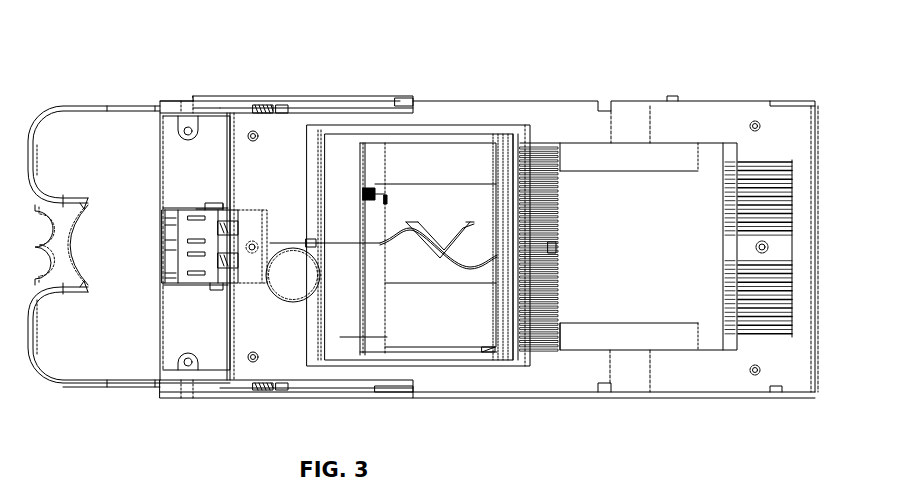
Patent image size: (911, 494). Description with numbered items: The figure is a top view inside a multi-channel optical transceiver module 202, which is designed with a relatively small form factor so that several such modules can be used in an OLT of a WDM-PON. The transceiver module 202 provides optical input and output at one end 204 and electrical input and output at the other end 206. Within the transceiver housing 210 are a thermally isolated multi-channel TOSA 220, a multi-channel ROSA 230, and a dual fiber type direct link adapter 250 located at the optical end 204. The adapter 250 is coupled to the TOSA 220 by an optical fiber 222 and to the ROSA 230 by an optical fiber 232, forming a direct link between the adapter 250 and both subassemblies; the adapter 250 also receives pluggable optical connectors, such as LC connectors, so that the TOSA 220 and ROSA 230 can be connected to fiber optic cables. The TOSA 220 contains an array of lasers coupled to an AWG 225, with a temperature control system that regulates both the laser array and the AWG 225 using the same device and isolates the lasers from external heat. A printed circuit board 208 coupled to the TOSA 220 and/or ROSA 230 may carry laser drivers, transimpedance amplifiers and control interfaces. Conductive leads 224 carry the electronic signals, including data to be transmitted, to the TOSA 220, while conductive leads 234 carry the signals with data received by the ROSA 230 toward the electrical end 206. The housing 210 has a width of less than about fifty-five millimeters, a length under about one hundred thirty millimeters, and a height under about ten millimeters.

The multi-channel optical transceiver module 202 is at (169, 62).
The end 204 is at (148, 225).
The end 206 is at (806, 184).
The printed circuit board 208 is at (563, 385).
The transceiver housing 210 is at (286, 397).
The thermally isolated multi-channel TOSA 220 is at (467, 380).
The optical fiber 222 is at (293, 230).
The conductive leads 224 is at (540, 158).
The AWG 225 is at (413, 284).
The multi-channel ROSA 230 is at (705, 376).
The optical fiber 232 is at (478, 267).
The conductive leads 234 is at (773, 170).
The dual fiber type direct link adapter 250 is at (200, 209).